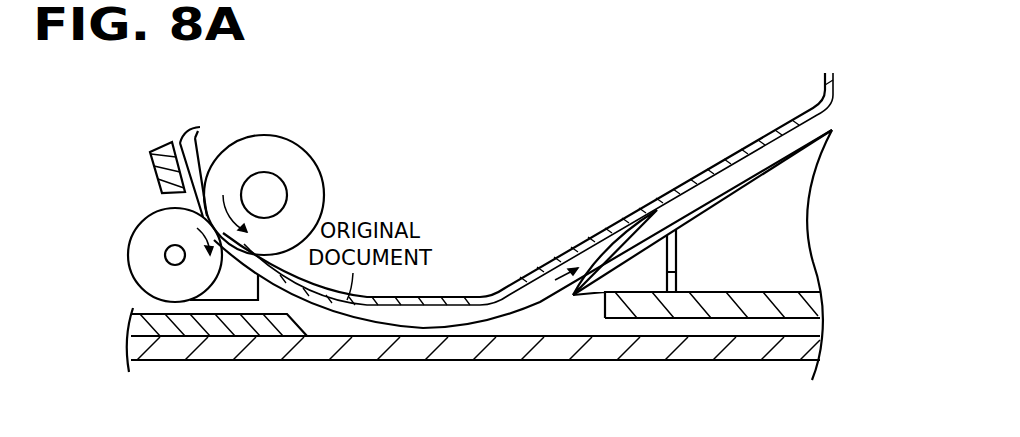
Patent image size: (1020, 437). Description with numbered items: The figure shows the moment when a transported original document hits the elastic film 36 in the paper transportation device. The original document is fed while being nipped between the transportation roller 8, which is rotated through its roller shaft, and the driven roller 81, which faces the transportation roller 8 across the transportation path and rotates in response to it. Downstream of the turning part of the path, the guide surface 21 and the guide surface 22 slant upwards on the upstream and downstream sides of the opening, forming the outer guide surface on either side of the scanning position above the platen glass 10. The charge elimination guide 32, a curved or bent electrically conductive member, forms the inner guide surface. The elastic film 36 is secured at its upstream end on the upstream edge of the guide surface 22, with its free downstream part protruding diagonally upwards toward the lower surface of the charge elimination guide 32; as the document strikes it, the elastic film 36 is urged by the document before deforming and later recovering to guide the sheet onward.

The transportation roller 8 is at (326, 172).
The driven roller 81 is at (130, 232).
The guide surface 21 is at (152, 178).
The charge elimination guide 32 is at (452, 293).
The elastic film 36 is at (623, 238).
The guide surface 22 is at (738, 190).
The platen glass 10 is at (580, 362).